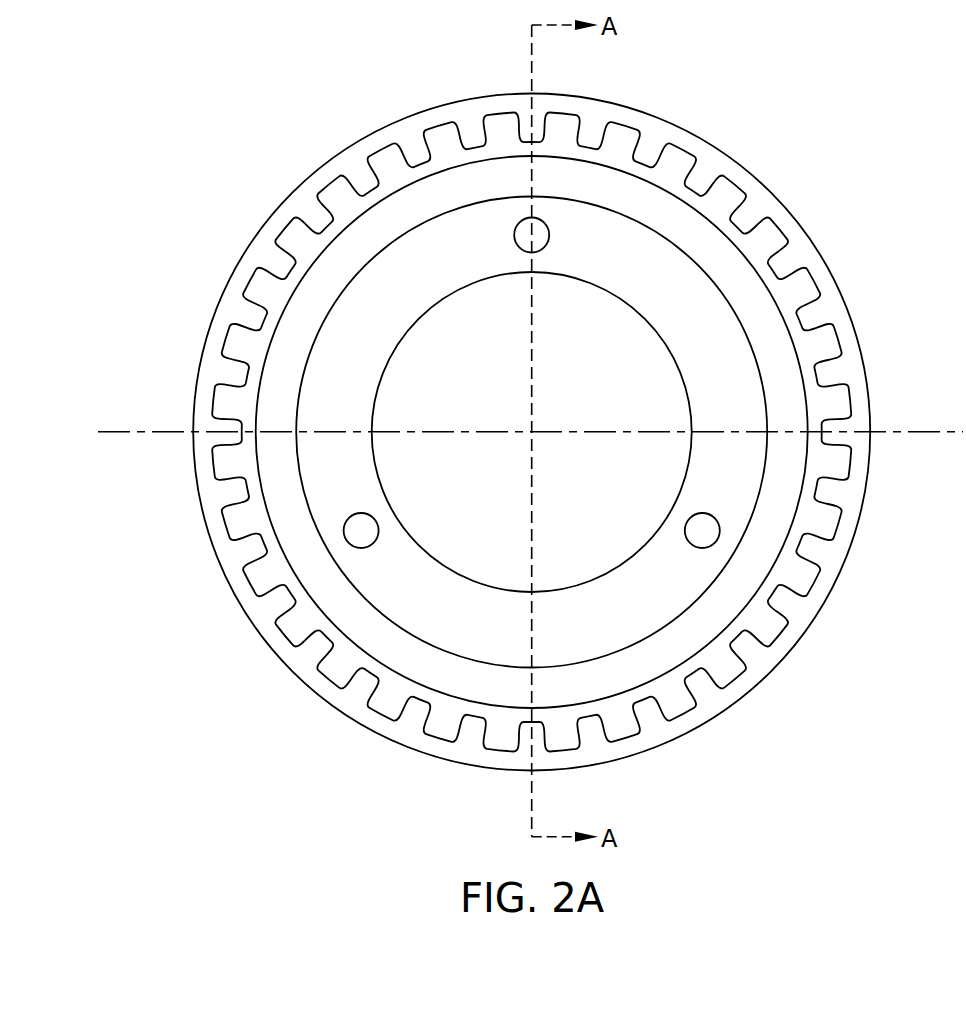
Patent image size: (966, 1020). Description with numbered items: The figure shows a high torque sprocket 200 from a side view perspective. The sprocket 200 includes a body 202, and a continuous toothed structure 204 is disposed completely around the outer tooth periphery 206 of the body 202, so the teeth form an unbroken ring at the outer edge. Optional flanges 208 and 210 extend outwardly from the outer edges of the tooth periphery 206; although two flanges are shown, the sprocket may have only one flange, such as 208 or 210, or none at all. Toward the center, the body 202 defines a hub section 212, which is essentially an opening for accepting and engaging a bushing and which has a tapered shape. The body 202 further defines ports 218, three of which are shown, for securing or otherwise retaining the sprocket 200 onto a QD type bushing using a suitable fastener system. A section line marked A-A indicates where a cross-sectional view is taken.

The sprocket 200 is at (542, 436).
The body 202 is at (368, 222).
The continuous toothed structure 204 is at (230, 518).
The outer tooth periphery 206 is at (564, 436).
The flange 208 is at (564, 432).
The flange 210 is at (825, 588).
The hub section 212 is at (612, 376).
The ports 218 is at (514, 240).